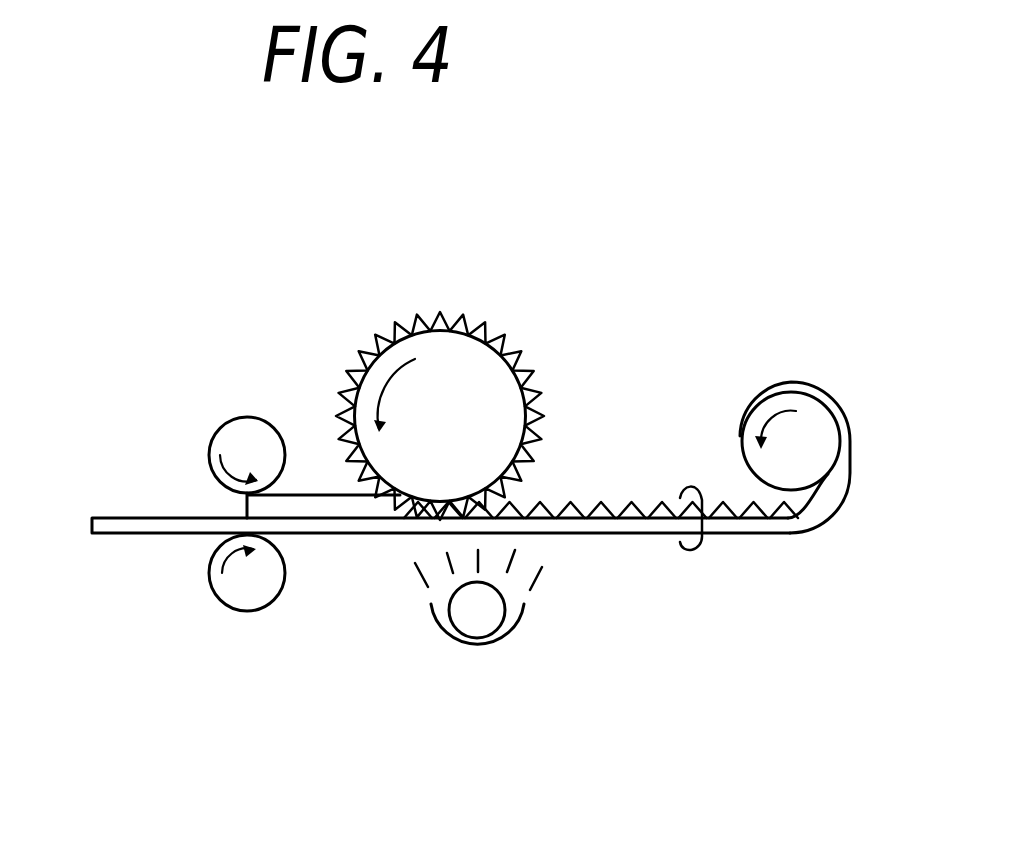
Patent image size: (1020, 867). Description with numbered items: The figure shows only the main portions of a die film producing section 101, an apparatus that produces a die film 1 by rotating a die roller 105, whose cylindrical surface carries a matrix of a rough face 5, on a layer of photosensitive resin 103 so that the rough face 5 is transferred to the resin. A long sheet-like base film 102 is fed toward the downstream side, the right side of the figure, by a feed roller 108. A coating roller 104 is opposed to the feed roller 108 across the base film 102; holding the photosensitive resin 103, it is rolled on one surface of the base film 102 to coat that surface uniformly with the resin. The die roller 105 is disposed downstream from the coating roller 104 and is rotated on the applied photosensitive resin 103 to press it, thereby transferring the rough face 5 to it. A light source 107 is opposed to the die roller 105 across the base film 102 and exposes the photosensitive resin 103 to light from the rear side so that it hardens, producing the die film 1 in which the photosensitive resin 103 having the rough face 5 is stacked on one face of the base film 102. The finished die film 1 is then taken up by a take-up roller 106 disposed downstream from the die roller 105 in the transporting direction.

The die film 1 is at (700, 552).
The rough face 5 is at (565, 505).
The die film producing section 101 is at (787, 287).
The base film 102 is at (132, 528).
The photosensitive resin 103 is at (307, 503).
The coating roller 104 is at (237, 433).
The die roller 105 is at (458, 357).
The take-up roller 106 is at (812, 422).
The light source 107 is at (485, 627).
The feed roller 108 is at (247, 590).